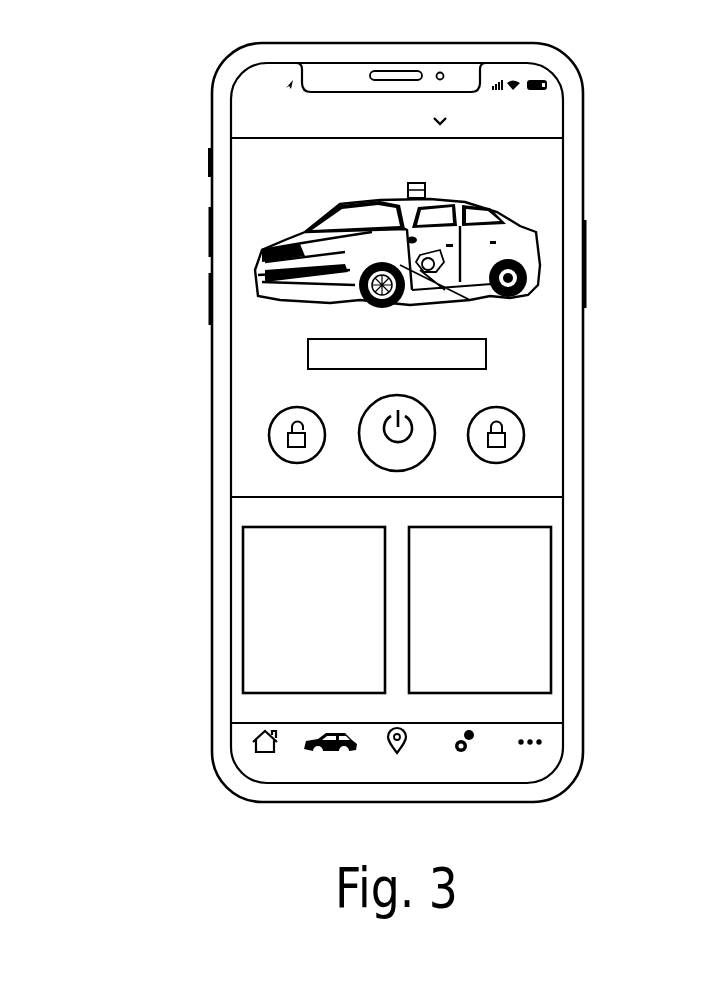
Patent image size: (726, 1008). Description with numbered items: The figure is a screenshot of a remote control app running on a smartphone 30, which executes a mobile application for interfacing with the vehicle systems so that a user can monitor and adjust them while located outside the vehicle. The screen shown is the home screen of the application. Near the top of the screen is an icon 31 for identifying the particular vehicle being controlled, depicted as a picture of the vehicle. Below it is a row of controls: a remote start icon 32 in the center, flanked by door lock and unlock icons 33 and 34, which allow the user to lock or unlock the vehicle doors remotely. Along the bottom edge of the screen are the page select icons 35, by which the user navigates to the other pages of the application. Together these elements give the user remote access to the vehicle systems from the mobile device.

The smartphone 30 is at (186, 157).
The icon for identifying a particular vehicle 31 is at (493, 207).
The remote start icon 32 is at (422, 462).
The door lock icon 33 is at (516, 412).
The door unlock icon 34 is at (273, 421).
The page select icons 35 is at (497, 717).